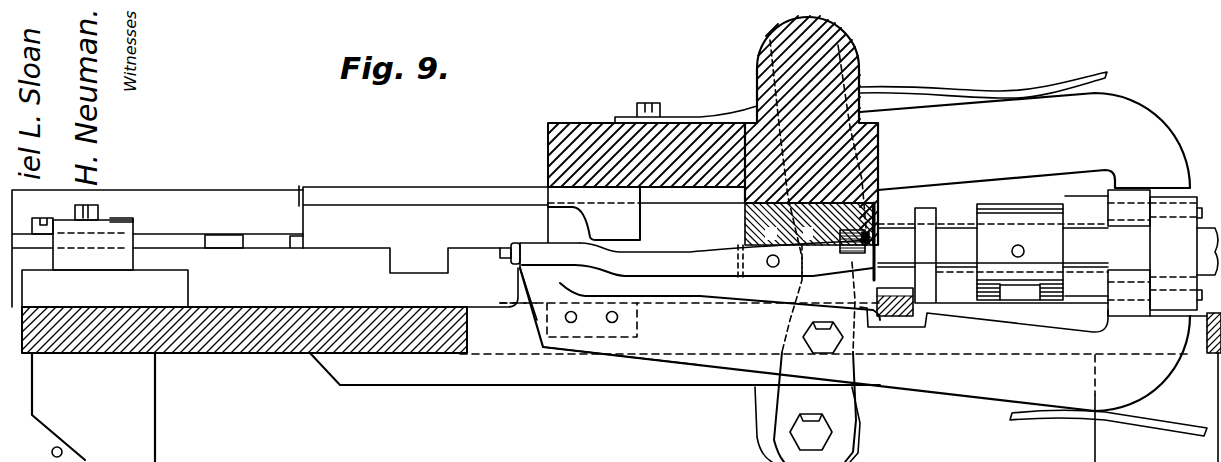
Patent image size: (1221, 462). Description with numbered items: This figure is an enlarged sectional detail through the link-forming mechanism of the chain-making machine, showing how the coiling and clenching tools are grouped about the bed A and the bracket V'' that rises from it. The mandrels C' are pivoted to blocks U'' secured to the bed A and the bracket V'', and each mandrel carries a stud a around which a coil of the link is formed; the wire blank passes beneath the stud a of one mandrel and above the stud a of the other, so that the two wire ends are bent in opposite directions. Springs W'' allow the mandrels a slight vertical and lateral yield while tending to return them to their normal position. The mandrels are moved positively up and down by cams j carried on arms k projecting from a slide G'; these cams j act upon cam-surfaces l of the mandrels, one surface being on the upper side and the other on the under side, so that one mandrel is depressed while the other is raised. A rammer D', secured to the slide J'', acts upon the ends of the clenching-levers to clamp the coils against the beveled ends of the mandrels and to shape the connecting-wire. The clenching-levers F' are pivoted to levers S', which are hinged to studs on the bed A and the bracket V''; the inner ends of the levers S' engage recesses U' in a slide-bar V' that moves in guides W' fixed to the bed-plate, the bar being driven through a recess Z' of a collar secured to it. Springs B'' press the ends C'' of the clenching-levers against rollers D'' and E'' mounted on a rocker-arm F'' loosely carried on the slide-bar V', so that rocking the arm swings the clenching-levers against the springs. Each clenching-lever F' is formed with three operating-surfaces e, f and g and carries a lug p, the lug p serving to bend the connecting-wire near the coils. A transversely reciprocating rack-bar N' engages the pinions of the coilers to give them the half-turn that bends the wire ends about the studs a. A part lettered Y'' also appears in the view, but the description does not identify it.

The bed A is at (285, 345).
The leg bracket Y'' is at (73, 406).
The slide J'' is at (102, 231).
The slide G' is at (226, 227).
The arms k is at (434, 190).
The rammer D' is at (421, 277).
The stud a is at (500, 253).
The operating-surface e is at (520, 273).
The operating-surface f is at (527, 267).
The operating-surface g is at (562, 270).
The blocks U'' is at (726, 258).
The cams j is at (594, 213).
The cam-surfaces l is at (642, 231).
The mandrel C' is at (785, 227).
The bracket V'' is at (652, 131).
The clenching-lever F' is at (855, 213).
The lever S' is at (835, 251).
The spring B'' is at (1033, 255).
The spring W'' is at (877, 223).
The recesses U' is at (890, 241).
The guides W' is at (940, 246).
The slide-bar V' is at (993, 248).
The recess Z' is at (1020, 252).
The ends C'' is at (1131, 251).
The roller D'' is at (1085, 187).
The roller E'' is at (1093, 292).
The rocker-arm F'' is at (1185, 275).
The rack-bar N' is at (896, 323).
The lug p is at (592, 326).